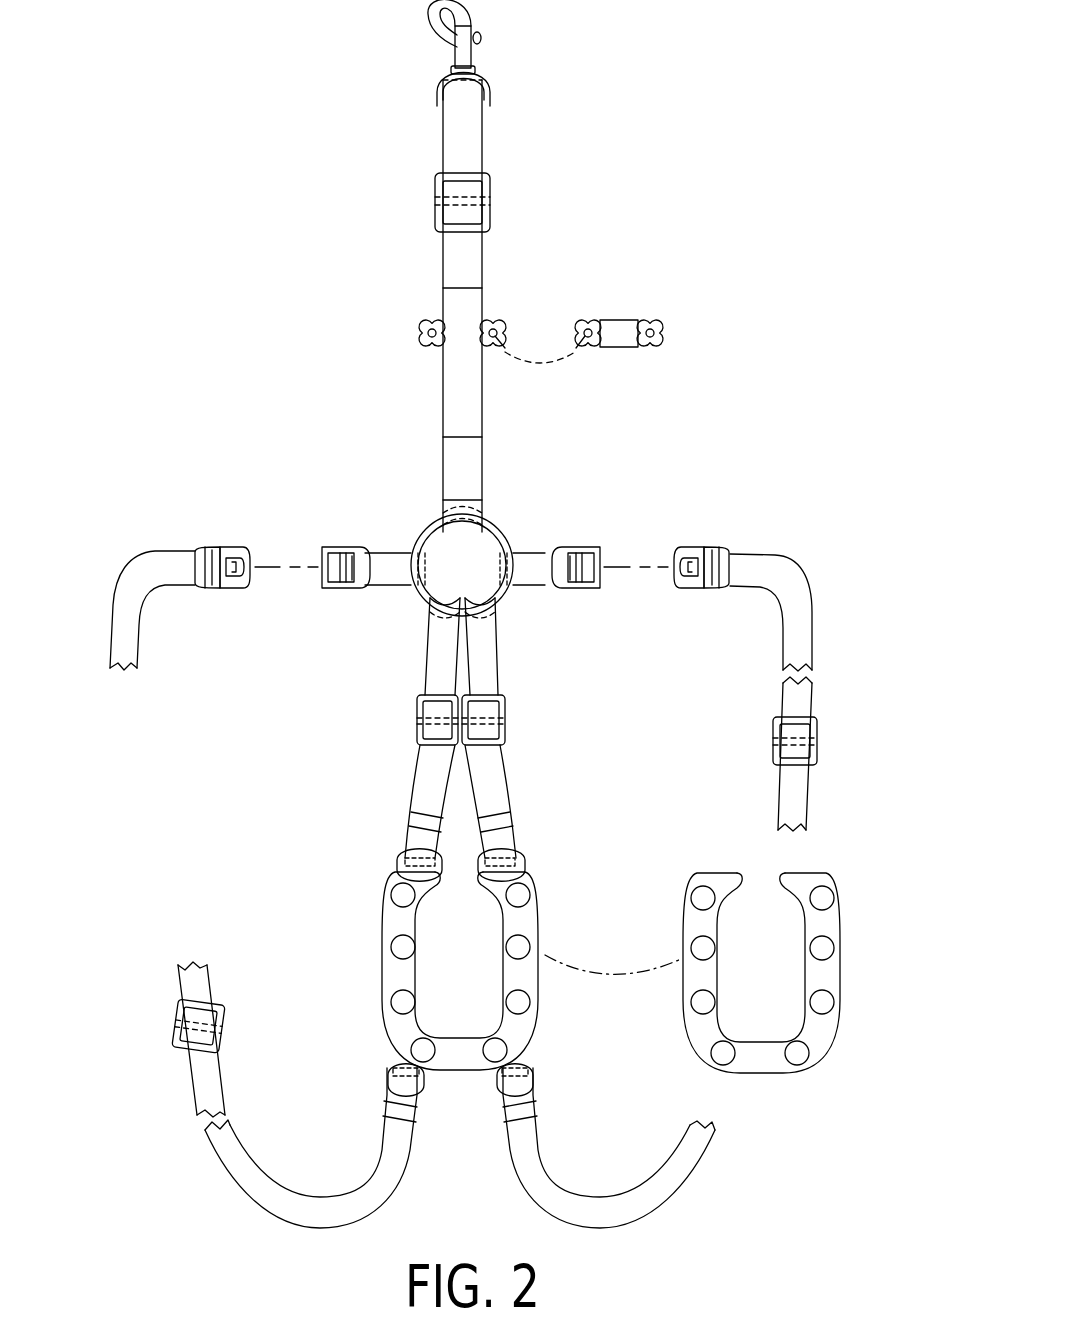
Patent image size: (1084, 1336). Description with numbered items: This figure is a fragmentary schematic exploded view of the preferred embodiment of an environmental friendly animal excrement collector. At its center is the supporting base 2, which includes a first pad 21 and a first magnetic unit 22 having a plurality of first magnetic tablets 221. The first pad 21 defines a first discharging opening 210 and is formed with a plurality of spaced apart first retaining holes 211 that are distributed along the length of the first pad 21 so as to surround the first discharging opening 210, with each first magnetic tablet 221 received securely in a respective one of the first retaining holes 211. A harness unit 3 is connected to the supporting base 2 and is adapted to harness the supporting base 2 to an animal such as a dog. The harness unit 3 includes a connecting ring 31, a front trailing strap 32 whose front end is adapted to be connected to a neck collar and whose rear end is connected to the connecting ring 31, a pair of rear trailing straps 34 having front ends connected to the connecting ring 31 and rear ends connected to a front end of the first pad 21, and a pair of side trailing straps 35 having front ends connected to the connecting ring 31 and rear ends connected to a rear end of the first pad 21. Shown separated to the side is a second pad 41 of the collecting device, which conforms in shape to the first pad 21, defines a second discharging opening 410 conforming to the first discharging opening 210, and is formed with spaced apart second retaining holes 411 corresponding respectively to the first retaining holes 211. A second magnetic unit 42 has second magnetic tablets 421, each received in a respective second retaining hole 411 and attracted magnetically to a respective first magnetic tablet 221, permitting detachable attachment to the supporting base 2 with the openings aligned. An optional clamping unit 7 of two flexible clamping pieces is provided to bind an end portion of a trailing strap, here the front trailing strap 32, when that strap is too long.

The supporting base 2 is at (338, 938).
The first pad 21 is at (385, 1012).
The first discharging opening 210 is at (475, 975).
The first retaining holes 211 is at (520, 948).
The first magnetic unit 22 is at (397, 893).
The first magnetic tablets 221 is at (400, 947).
The harness unit 3 is at (497, 155).
The connecting ring 31 is at (490, 532).
The front trailing strap 32 is at (455, 256).
The rear trailing straps 34 is at (430, 792).
The side trailing straps 35 is at (132, 643).
The second pad 41 is at (840, 908).
The second discharging opening 410 is at (757, 1020).
The second retaining holes 411 is at (818, 1018).
The second magnetic unit 42 is at (832, 948).
The second magnetic tablets 421 is at (826, 1005).
The clamping unit 7 is at (628, 305).